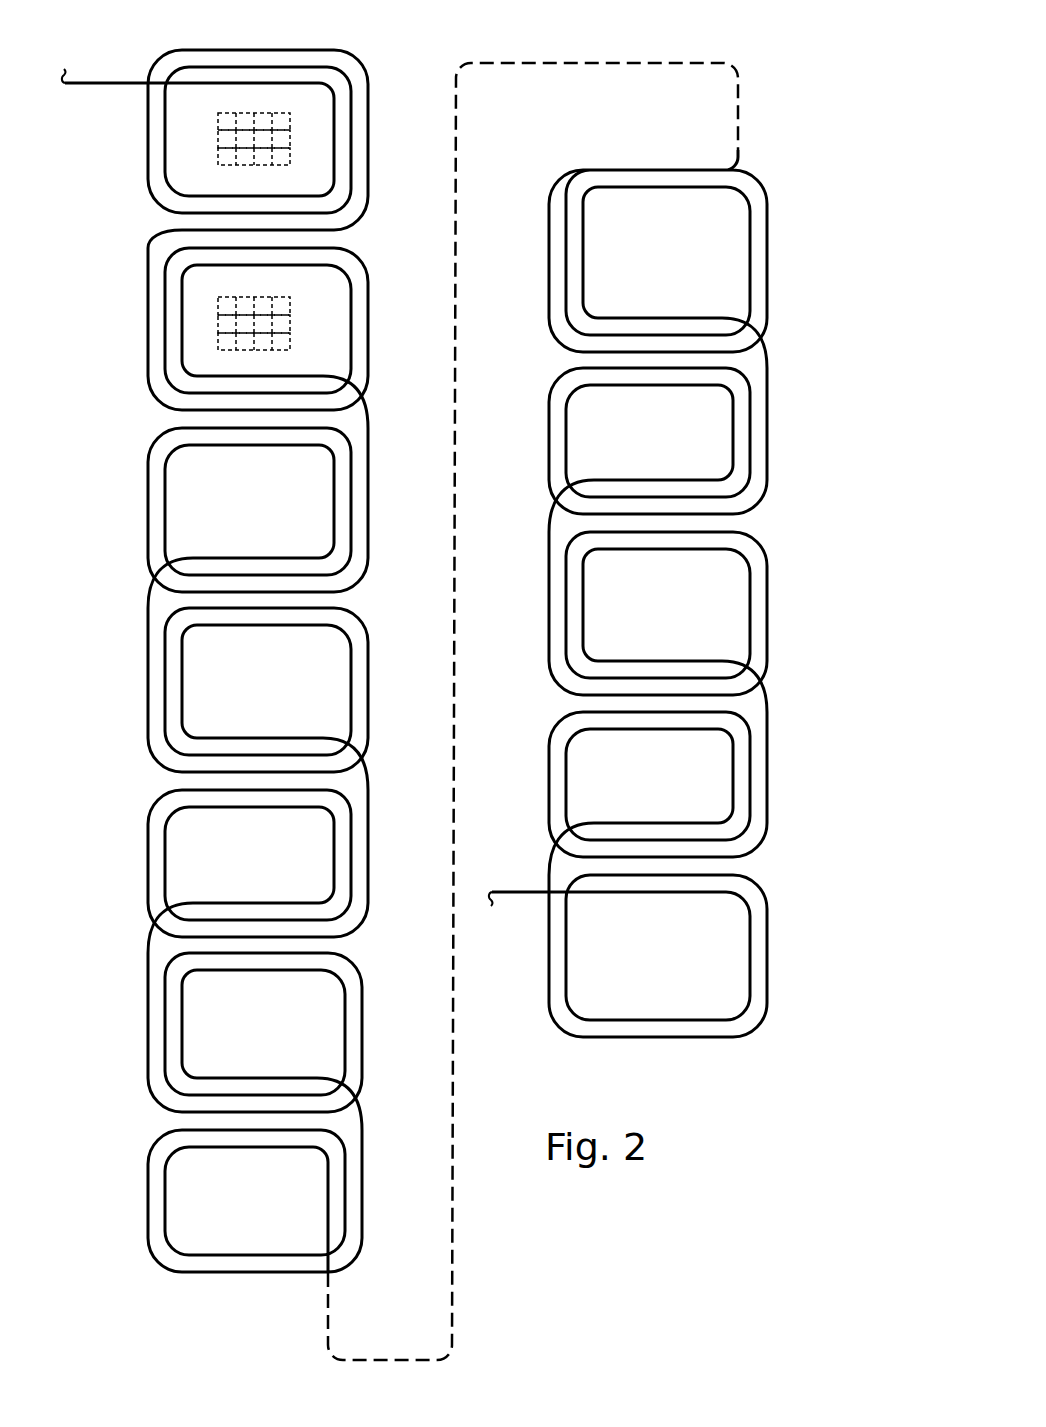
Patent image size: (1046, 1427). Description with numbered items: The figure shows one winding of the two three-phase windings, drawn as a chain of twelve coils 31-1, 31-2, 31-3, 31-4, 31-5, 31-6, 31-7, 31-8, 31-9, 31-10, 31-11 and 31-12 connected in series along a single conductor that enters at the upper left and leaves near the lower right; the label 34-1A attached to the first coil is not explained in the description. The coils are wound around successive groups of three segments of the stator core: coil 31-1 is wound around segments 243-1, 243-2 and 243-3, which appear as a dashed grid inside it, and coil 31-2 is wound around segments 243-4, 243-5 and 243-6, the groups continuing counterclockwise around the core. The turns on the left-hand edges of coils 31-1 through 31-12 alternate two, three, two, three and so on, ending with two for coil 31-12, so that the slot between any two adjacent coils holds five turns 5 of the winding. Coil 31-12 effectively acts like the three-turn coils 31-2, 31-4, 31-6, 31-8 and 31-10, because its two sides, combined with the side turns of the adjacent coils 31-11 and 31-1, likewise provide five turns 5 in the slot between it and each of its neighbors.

The pickup coil 34-1A is at (212, 49).
The coil 31-1 is at (148, 137).
The coil 31-2 is at (148, 317).
The coil 31-3 is at (148, 492).
The coil 31-4 is at (148, 675).
The coil 31-5 is at (148, 850).
The coil 31-6 is at (148, 1025).
The coil 31-7 is at (148, 1205).
The coil 31-8 is at (770, 262).
The coil 31-9 is at (770, 434).
The coil 31-10 is at (770, 605).
The coil 31-11 is at (770, 777).
The coil 31-12 is at (770, 955).
The turns between adjacent coils 5 is at (165, 223).
The core segment 243-1 is at (287, 115).
The core segment 243-2 is at (287, 133).
The core segment 243-3 is at (287, 155).
The core segment 243-4 is at (287, 299).
The core segment 243-5 is at (287, 319).
The core segment 243-6 is at (287, 341).